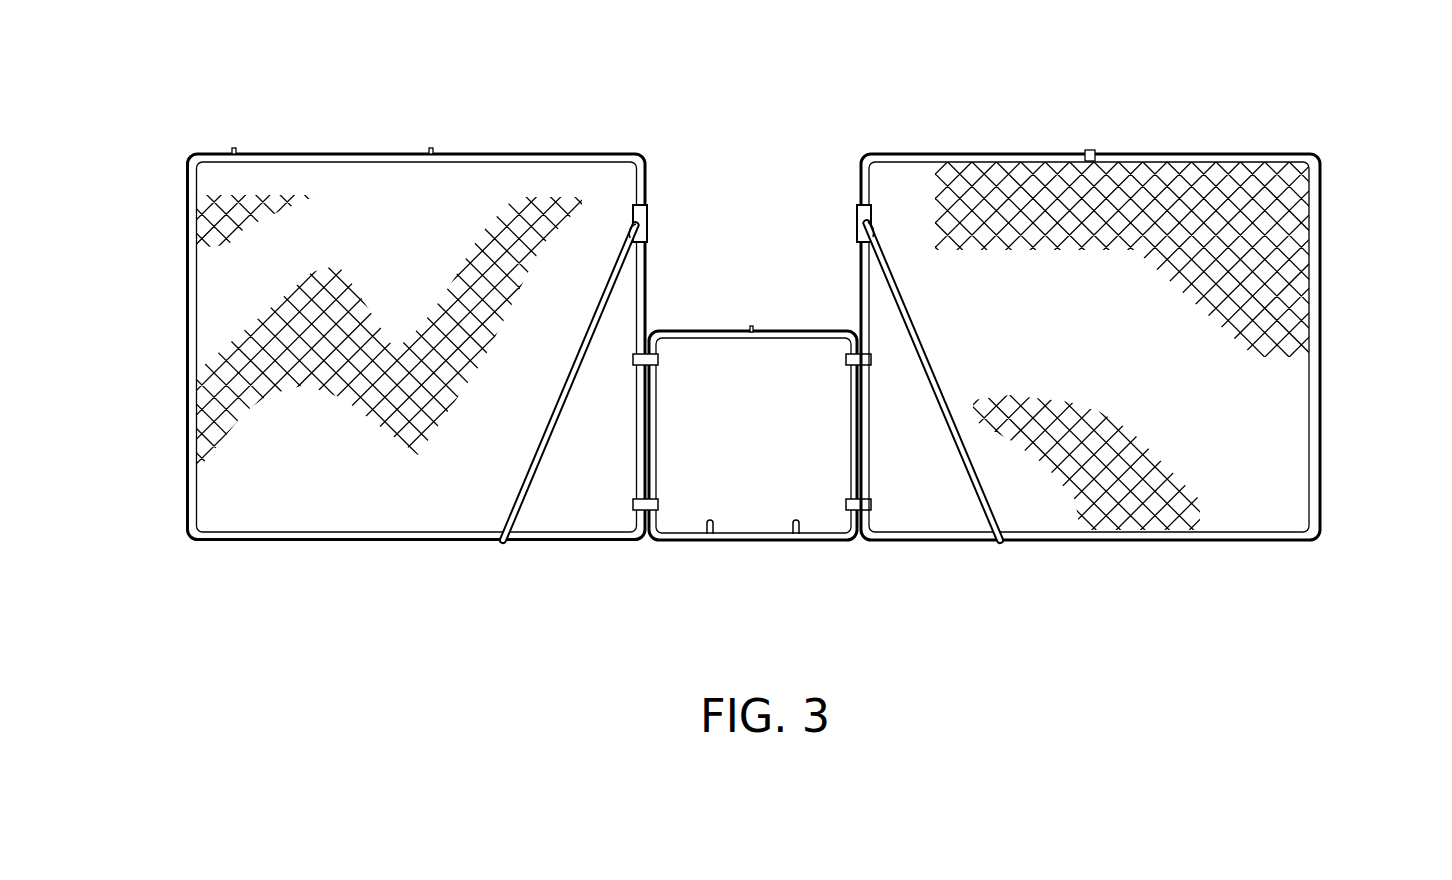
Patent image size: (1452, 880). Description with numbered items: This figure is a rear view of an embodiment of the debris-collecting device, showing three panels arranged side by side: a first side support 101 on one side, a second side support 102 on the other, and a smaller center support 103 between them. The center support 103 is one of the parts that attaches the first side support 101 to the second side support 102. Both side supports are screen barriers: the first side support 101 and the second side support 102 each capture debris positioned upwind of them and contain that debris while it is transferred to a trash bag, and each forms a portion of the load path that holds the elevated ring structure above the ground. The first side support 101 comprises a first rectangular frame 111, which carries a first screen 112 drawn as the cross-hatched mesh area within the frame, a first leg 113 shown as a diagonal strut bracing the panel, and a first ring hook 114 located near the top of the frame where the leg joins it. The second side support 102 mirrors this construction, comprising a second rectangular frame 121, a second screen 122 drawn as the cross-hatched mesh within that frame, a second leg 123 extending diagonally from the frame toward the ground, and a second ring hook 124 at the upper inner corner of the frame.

The first side support 101 is at (1302, 140).
The second side support 102 is at (186, 136).
The center support 103 is at (708, 330).
The first rectangular frame 111 is at (1153, 152).
The first screen 112 is at (1283, 272).
The first leg 113 is at (965, 455).
The first ring hook 114 is at (898, 150).
The second rectangular frame 121 is at (520, 152).
The second screen 122 is at (222, 388).
The second leg 123 is at (549, 435).
The second ring hook 124 is at (604, 152).